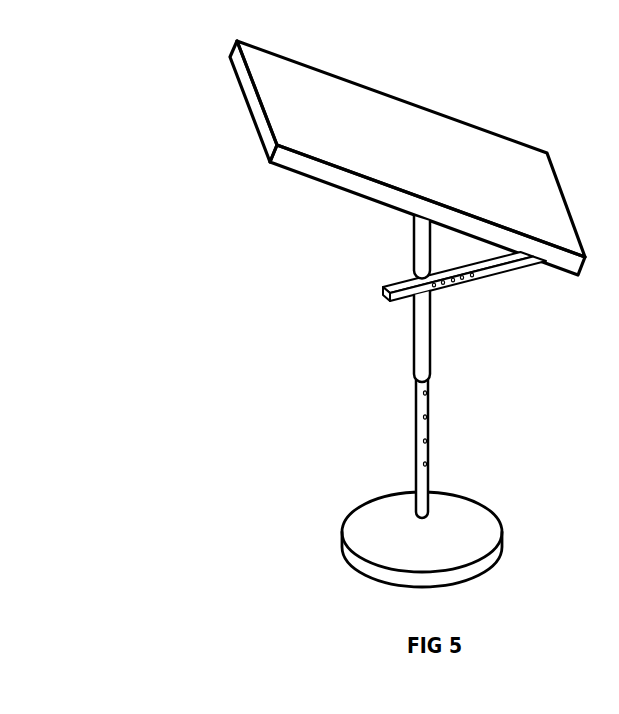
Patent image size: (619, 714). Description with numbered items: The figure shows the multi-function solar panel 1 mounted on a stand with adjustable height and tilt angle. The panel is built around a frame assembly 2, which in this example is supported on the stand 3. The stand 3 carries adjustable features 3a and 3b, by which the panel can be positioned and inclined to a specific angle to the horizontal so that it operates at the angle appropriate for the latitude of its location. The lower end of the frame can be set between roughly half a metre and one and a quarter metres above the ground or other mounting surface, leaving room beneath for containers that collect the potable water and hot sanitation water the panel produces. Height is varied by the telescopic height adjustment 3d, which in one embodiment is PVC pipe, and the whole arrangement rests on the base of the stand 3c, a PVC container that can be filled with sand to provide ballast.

The multi-function solar panel 1 is at (323, 314).
The frame assembly 2 is at (248, 121).
The stand 3 is at (402, 401).
The adjustable feature 3a is at (462, 290).
The adjustable feature 3b is at (460, 364).
The base of the stand 3c is at (482, 494).
The telescopic height adjustment 3d is at (393, 383).